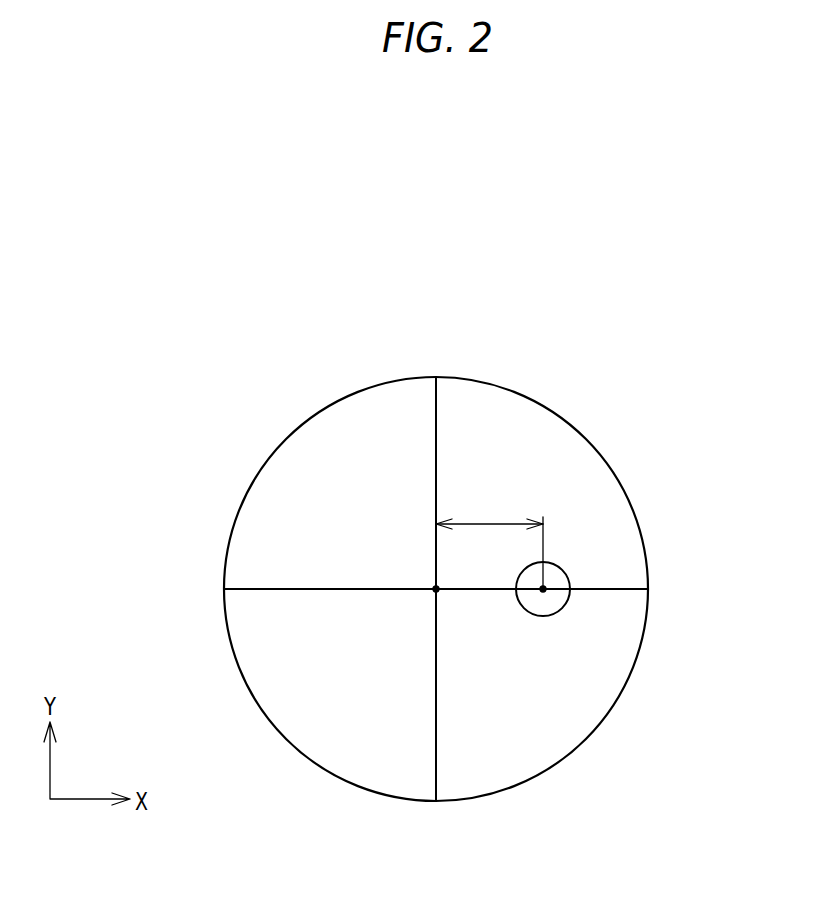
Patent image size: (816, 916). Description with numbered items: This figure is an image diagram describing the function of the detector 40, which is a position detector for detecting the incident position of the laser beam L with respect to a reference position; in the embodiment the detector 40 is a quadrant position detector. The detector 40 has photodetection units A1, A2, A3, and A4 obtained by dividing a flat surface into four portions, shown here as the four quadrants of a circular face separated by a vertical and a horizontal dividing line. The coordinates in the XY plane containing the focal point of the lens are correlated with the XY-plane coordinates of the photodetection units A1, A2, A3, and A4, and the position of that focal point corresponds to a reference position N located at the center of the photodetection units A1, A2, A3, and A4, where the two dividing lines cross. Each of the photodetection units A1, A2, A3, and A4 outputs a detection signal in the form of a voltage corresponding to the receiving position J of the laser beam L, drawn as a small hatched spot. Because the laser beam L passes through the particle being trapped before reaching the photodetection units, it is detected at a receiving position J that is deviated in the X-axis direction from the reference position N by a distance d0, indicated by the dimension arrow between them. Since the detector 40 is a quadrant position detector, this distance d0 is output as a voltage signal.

The detector 40 is at (543, 403).
The reference position N is at (433, 593).
The receiving position J is at (546, 593).
The laser beam L is at (533, 607).
The distance d0 is at (489, 512).
The photodetection unit A1 is at (567, 478).
The photodetection unit A2 is at (567, 698).
The photodetection unit A3 is at (307, 480).
The photodetection unit A4 is at (308, 697).